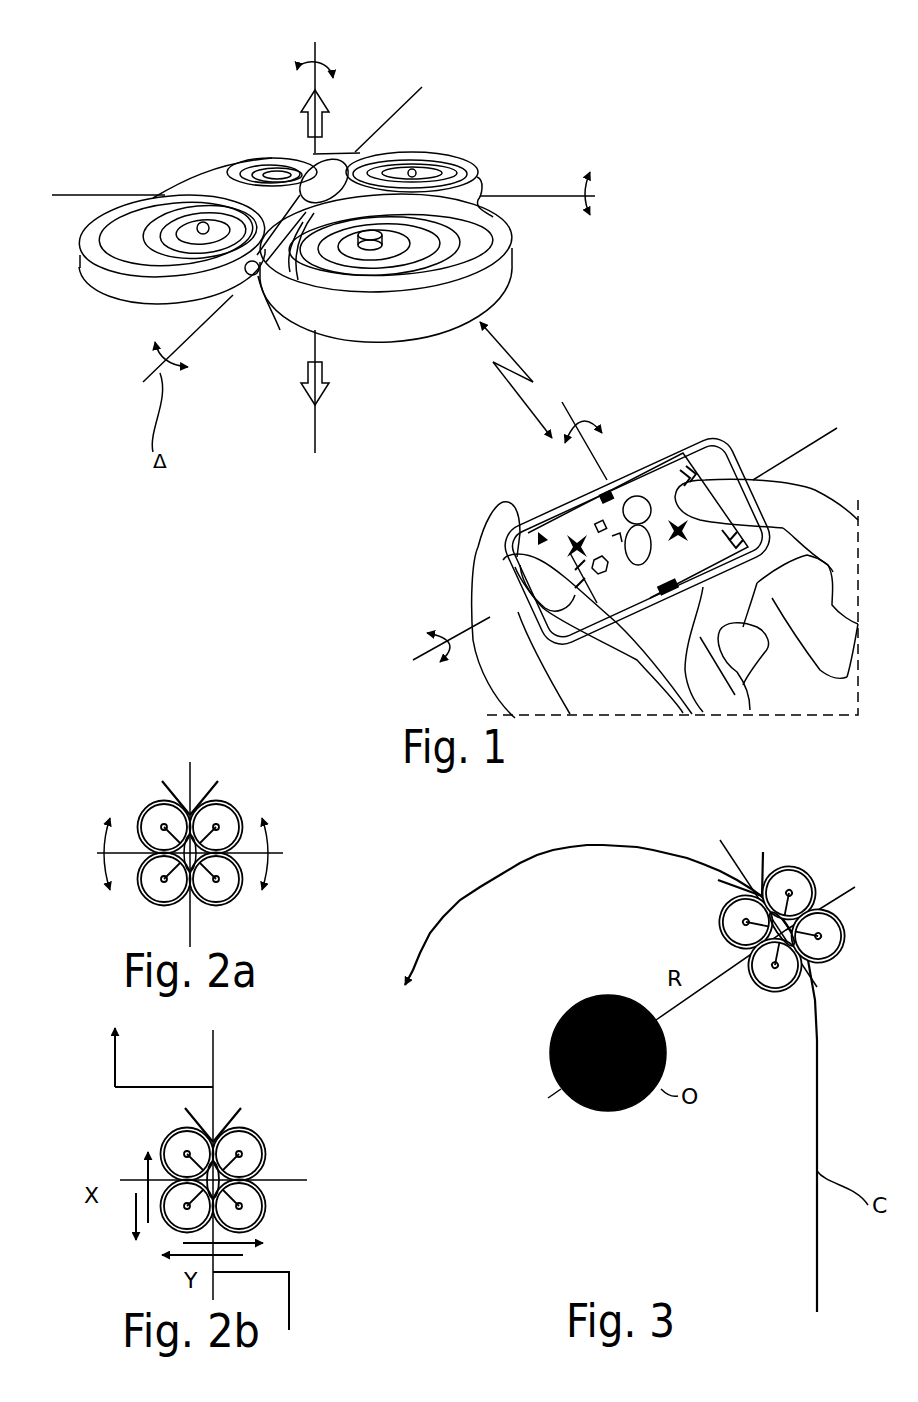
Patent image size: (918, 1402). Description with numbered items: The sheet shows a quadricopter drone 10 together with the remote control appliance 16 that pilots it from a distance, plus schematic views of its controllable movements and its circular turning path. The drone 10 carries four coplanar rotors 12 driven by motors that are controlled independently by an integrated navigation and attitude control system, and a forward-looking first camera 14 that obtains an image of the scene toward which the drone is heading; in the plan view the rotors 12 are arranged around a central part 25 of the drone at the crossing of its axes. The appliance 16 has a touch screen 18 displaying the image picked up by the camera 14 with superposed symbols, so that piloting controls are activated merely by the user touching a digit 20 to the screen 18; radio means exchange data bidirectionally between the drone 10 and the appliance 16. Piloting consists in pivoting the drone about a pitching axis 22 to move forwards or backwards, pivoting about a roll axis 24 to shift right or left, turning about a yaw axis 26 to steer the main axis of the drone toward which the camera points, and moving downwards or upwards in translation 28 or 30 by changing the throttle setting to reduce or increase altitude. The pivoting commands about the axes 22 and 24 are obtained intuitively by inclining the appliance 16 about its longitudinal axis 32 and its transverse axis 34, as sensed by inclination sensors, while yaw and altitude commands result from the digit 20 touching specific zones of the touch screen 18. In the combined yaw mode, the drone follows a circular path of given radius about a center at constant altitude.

In FIG. 1, the drone 10 is at (549, 107).
In FIG. 2A, the drone 10 is at (140, 820).
In FIG. 2B, the drone 10 is at (166, 1132).
In FIG. 3, the drone 10 is at (812, 870).
In FIG. 1, the rotors 12 is at (253, 177).
In FIG. 1, the first camera 14 is at (253, 275).
In FIG. 1, the remote control appliance 16 is at (715, 417).
In FIG. 1, the touch screen 18 is at (633, 500).
In FIG. 1, the digit 20 is at (750, 497).
In FIG. 1, the pitching axis 22 is at (593, 197).
In FIG. 2B, the pitching axis 22 is at (283, 1177).
In FIG. 1, the roll axis 24 is at (153, 373).
In FIG. 2B, the roll axis 24 is at (213, 1068).
In FIG. 2A, the centre of drone 25 is at (192, 850).
In FIG. 1, the yaw axis 26 is at (313, 57).
In FIG. 1, the downward translation 28 is at (322, 388).
In FIG. 1, the upward translation 30 is at (335, 118).
In FIG. 1, the longitudinal axis 32 is at (418, 645).
In FIG. 1, the transverse axis 34 is at (578, 410).